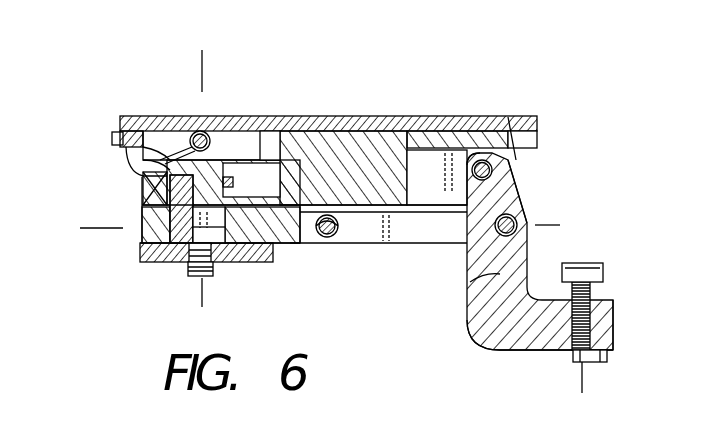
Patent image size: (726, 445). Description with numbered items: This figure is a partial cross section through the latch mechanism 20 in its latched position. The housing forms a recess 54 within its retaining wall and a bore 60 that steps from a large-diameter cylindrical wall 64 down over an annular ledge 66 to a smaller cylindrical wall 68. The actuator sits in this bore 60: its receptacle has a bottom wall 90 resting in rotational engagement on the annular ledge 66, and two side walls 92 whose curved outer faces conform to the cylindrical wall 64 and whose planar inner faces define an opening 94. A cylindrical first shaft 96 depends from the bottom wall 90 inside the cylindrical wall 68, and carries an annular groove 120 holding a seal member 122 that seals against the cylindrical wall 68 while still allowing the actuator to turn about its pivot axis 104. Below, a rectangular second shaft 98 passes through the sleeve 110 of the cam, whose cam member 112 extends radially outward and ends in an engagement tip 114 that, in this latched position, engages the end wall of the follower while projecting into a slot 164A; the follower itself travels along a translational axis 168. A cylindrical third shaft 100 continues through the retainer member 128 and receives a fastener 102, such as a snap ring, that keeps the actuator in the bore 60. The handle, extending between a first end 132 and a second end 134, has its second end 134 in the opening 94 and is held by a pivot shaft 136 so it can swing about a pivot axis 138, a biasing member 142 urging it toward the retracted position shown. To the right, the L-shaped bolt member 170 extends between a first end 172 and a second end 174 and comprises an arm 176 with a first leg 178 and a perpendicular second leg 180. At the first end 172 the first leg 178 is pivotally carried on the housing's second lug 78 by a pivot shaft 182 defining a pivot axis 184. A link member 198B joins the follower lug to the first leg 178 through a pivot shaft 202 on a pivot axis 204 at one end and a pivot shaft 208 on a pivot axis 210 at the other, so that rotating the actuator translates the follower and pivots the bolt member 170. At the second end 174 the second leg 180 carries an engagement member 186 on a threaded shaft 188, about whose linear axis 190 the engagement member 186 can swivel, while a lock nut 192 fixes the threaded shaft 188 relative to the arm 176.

The latch mechanism 20 is at (345, 218).
The recess 54 is at (440, 115).
The bore 60 is at (299, 115).
The cylindrical wall 64 is at (152, 115).
The annular ledge 66 is at (133, 148).
The cylindrical wall 68 is at (140, 206).
The second lug 78 is at (413, 150).
The bottom wall 90 is at (235, 182).
The side walls 92 is at (237, 113).
The opening 94 is at (280, 115).
The first shaft 96 is at (250, 195).
The second shaft 98 is at (179, 248).
The third shaft 100 is at (233, 293).
The fastener 102 is at (213, 262).
The pivot axis 104 is at (208, 62).
The sleeve 110 is at (258, 262).
The cam member 112 is at (290, 245).
The engagement tip 114 is at (330, 240).
The annular groove 120 is at (143, 178).
The seal member 122 is at (145, 193).
The retainer member 128 is at (142, 253).
The first end 132 is at (515, 99).
The second end 134 is at (133, 115).
The pivot shaft 136 is at (224, 115).
The pivot axis 138 is at (196, 131).
The biasing member 142 is at (112, 140).
The slot 164A is at (150, 262).
The translational axis 168 is at (80, 238).
The bolt member 170 is at (487, 355).
The first end 172 is at (522, 175).
The second end 174 is at (615, 325).
The arm 176 is at (462, 348).
The first leg 178 is at (447, 313).
The second leg 180 is at (523, 350).
The pivot shaft 182 is at (515, 215).
The pivot axis 184 is at (508, 117).
The engagement member 186 is at (583, 260).
The threaded shaft 188 is at (603, 276).
The linear axis 190 is at (582, 380).
The lock nut 192 is at (609, 362).
The link member 198B is at (448, 229).
The pivot shaft 202 is at (518, 218).
The pivot axis 204 is at (490, 203).
The pivot shaft 208 is at (398, 115).
The pivot axis 210 is at (360, 243).